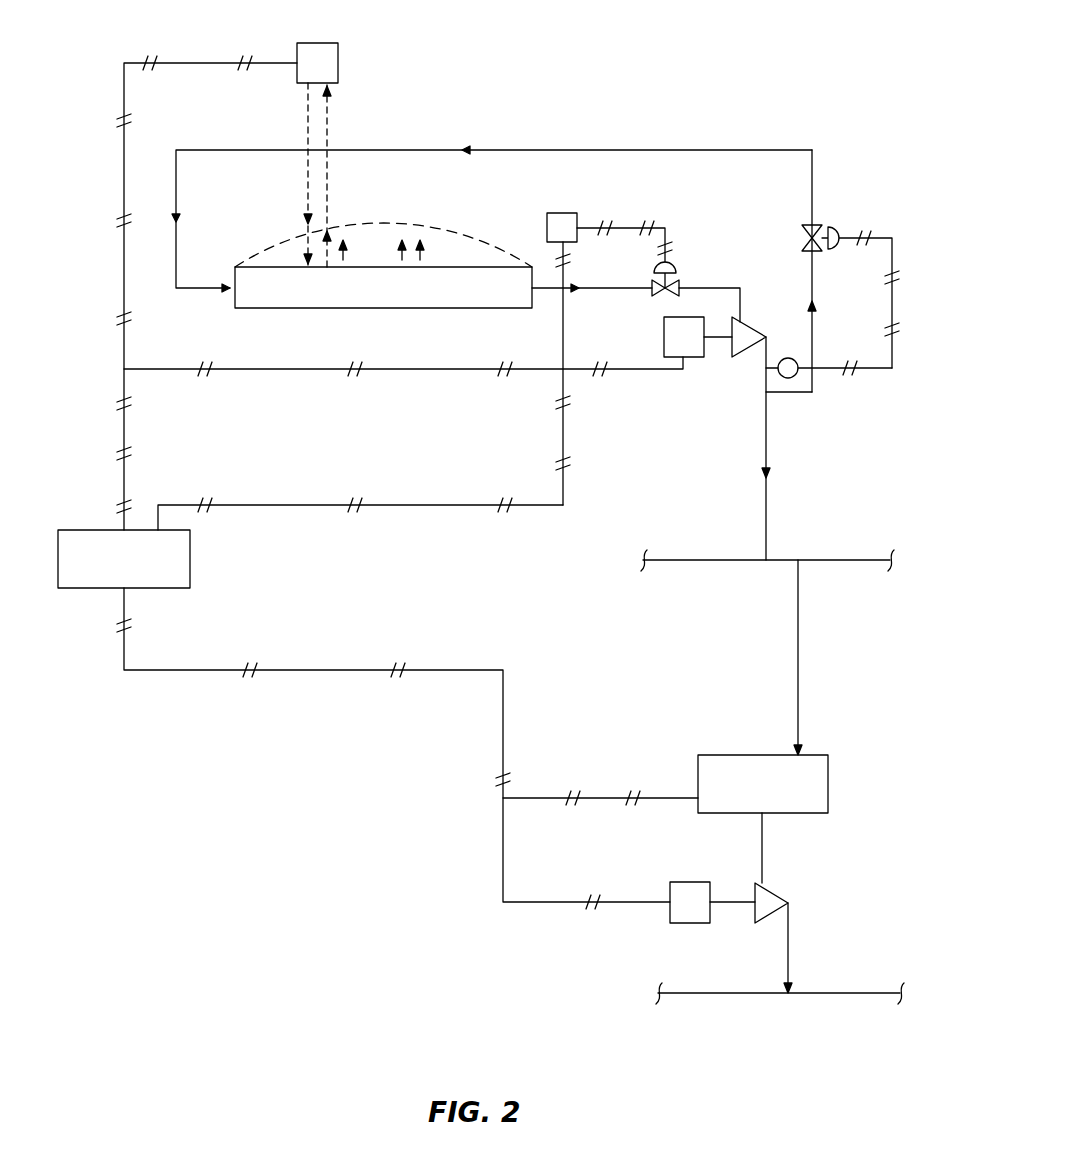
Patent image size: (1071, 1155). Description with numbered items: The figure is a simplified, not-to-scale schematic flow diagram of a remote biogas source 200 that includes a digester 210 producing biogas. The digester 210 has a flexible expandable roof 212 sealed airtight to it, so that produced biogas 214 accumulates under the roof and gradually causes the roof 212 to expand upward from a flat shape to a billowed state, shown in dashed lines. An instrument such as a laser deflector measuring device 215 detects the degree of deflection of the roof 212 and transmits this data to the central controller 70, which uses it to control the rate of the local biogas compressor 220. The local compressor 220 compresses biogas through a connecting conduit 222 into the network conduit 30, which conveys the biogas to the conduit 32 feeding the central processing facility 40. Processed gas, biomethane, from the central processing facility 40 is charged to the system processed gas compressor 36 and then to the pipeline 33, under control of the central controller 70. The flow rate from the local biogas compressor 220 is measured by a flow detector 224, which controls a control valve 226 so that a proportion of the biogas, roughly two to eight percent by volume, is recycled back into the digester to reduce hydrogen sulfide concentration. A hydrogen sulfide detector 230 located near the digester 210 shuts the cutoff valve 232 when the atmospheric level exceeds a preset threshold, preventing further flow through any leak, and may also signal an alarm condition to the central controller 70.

The remote biogas source 200 is at (711, 49).
The laser deflector measuring device 215 is at (323, 43).
The produced biogas 214 is at (400, 260).
The flexible expandable roof 212 is at (451, 260).
The digester 210 is at (434, 312).
The hydrogen sulfide detector 230 is at (564, 213).
The cutoff valve 232 is at (681, 284).
The control valve 226 is at (829, 230).
The local biogas compressor 220 is at (733, 350).
The flow detector 224 is at (791, 379).
The connecting conduit 222 is at (769, 437).
The network conduit 30 is at (818, 560).
The conduit 32 is at (800, 622).
The central processing facility 40 is at (779, 797).
The system processed gas compressor 36 is at (772, 891).
The pipeline 33 is at (854, 987).
The central controller 70 is at (140, 572).